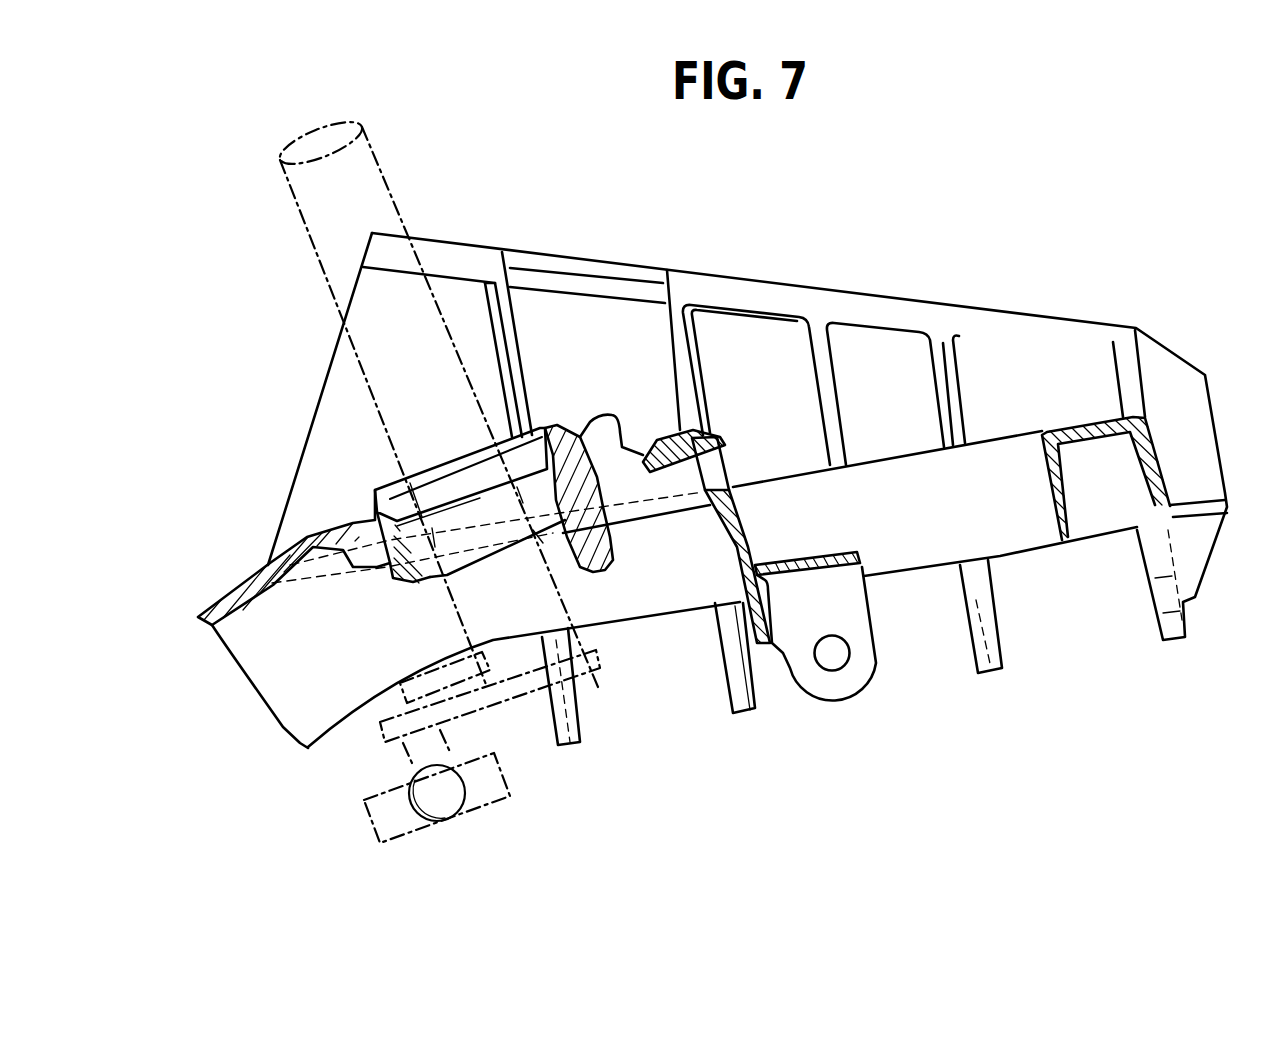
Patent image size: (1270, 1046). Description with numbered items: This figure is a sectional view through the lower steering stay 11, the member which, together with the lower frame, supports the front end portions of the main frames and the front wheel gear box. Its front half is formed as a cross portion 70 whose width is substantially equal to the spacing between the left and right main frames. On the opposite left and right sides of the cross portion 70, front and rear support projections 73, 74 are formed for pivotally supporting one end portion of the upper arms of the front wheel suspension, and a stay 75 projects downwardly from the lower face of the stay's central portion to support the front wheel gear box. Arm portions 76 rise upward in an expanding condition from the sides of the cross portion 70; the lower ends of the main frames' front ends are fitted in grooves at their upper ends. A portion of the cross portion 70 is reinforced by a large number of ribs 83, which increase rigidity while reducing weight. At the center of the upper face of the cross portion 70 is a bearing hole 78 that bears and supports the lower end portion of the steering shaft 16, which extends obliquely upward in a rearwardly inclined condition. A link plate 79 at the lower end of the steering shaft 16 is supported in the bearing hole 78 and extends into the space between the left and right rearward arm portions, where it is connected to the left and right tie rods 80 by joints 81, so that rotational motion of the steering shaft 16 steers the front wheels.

The lower steering stay 11 is at (1013, 285).
The steering shaft 16 is at (300, 228).
The cross portion 70 is at (905, 540).
The support projection 73 is at (1143, 560).
The support projection 74 is at (723, 683).
The stay 75 is at (808, 690).
The arm portion 76 is at (873, 313).
The bearing hole 78 is at (490, 513).
The link plate 79 is at (438, 698).
The tie rod 80 is at (360, 830).
The joint 81 is at (448, 827).
The rib 83 is at (670, 335).